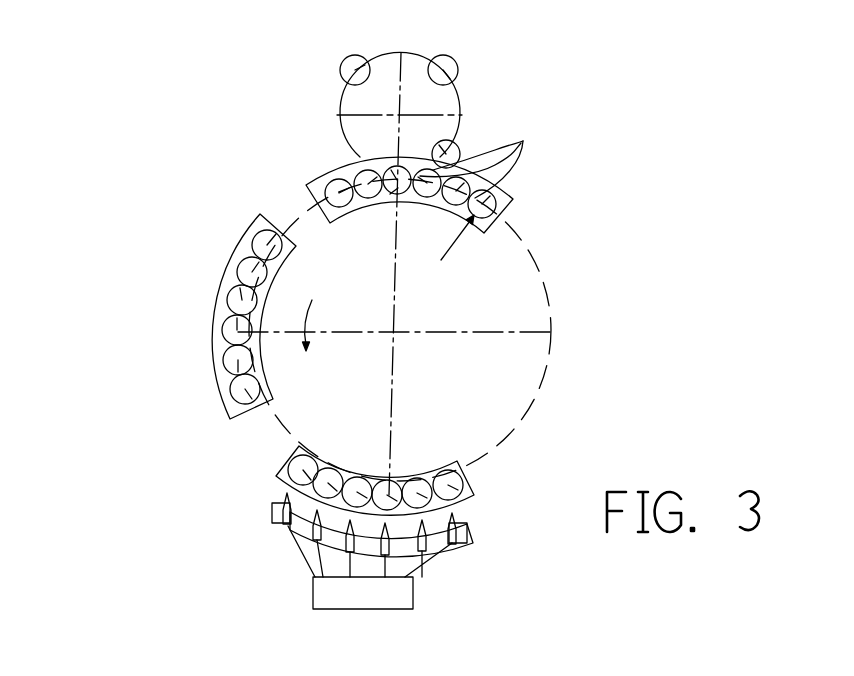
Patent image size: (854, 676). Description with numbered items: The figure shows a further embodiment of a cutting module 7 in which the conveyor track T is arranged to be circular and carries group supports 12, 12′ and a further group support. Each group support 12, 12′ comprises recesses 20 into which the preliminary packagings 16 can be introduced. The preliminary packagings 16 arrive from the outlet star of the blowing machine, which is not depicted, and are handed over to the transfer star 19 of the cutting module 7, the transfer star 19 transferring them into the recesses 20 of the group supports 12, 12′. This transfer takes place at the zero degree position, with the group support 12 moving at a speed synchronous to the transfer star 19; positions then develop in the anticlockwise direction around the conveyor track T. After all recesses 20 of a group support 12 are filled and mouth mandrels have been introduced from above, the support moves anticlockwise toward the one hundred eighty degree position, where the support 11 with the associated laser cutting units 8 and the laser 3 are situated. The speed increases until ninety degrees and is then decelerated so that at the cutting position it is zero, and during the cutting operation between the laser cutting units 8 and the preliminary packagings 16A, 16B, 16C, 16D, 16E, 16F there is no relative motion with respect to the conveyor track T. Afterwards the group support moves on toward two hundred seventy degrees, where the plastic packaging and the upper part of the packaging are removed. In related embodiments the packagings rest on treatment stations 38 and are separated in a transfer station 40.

The laser 3 is at (403, 602).
The cutting module 7 is at (108, 296).
The laser cutting units 8 is at (317, 533).
The support 11 is at (468, 538).
The group support 12 is at (315, 182).
The group support 12′ is at (241, 250).
The preliminary packagings 16 is at (445, 58).
The preliminary packaging 16A is at (304, 465).
The preliminary packaging 16B is at (330, 475).
The preliminary packaging 16C is at (356, 486).
The preliminary packaging 16D is at (388, 490).
The preliminary packaging 16E is at (416, 490).
The preliminary packaging 16F is at (443, 482).
The transfer star 19 is at (459, 99).
The recesses 20 is at (524, 140).
The treatment stations 38 is at (446, 257).
The transfer station 40 is at (390, 193).
The conveyor track T is at (534, 400).